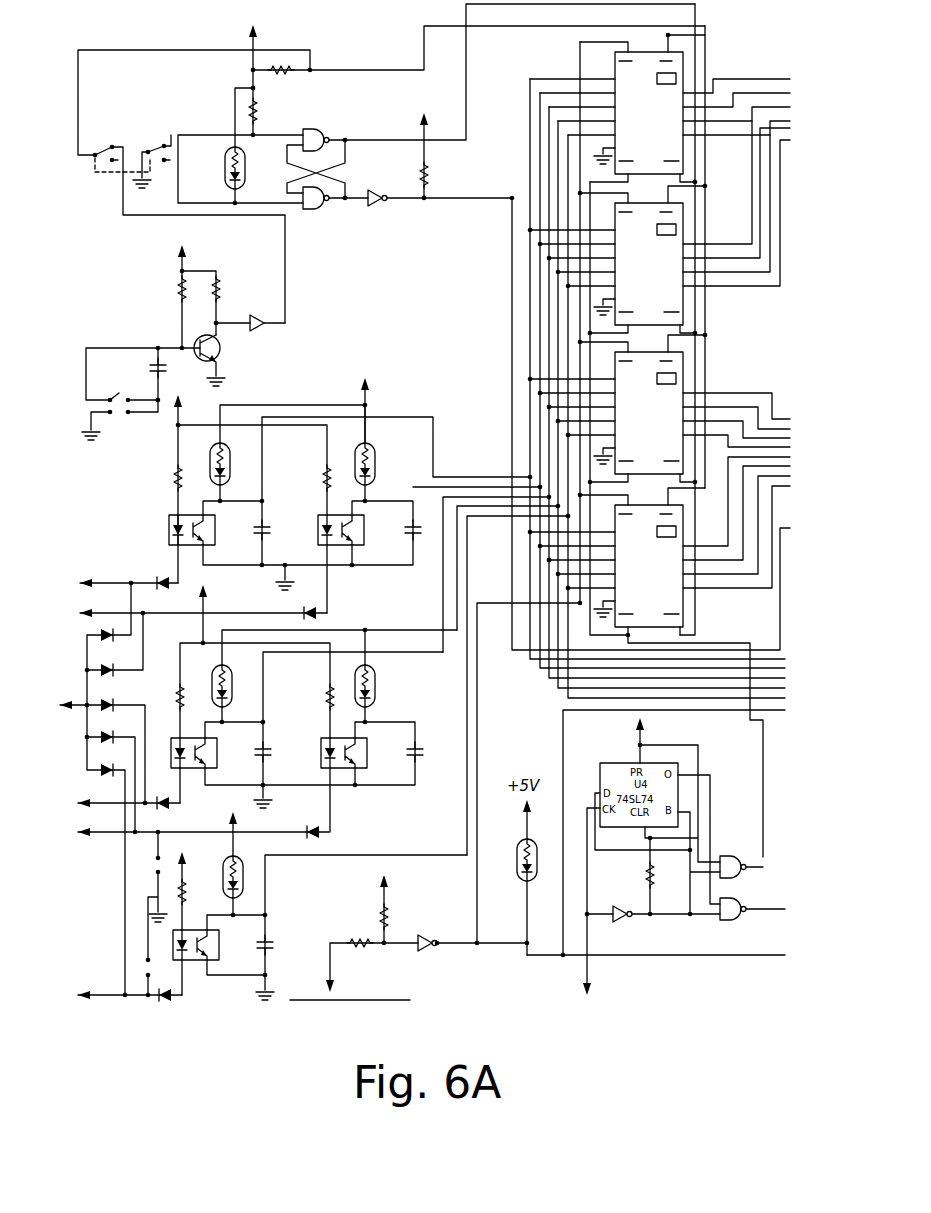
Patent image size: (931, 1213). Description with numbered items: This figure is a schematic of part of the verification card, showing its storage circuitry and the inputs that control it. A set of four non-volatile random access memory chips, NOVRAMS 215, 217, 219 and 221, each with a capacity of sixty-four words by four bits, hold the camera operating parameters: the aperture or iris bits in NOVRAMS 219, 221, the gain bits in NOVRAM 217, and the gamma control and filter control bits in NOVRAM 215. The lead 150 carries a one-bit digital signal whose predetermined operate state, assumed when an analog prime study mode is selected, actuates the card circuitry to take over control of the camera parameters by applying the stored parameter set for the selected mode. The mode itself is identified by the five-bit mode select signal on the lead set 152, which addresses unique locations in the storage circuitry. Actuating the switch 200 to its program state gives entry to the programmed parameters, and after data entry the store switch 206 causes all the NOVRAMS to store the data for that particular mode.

The non-volatile random access memory chip 215 is at (668, 52).
The non-volatile random access memory chip 217 is at (670, 203).
The non-volatile random access memory chip 219 is at (670, 352).
The non-volatile random access memory chip 221 is at (668, 492).
The switch 200 is at (128, 256).
The store switch 206 is at (136, 471).
The lead set 152 is at (118, 978).
The lead 150 is at (332, 966).